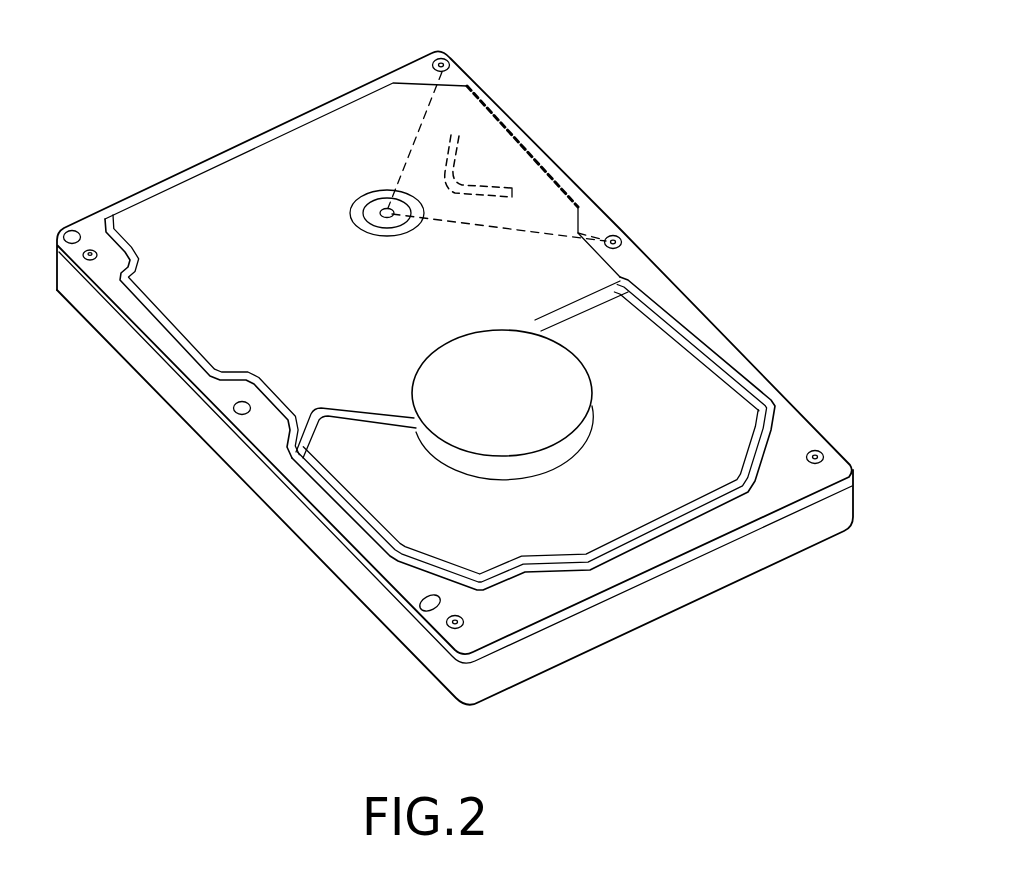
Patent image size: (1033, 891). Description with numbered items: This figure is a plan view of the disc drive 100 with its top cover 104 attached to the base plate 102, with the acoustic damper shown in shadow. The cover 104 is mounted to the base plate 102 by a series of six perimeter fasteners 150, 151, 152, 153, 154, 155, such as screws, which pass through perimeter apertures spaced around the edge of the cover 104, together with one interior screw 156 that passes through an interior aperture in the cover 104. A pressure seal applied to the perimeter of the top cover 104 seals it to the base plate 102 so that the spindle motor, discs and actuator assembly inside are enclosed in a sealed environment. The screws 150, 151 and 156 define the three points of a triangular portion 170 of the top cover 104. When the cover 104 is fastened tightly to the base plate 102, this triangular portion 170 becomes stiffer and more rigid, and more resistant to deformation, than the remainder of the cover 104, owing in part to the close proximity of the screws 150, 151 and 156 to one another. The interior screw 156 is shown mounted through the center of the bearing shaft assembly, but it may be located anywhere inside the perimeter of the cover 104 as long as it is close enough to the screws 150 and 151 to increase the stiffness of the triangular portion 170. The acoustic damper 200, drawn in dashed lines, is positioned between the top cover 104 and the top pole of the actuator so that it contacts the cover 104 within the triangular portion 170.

The disc drive 100 is at (758, 608).
The base plate 102 is at (777, 545).
The top cover 104 is at (562, 122).
The perimeter fastener 150 is at (447, 56).
The perimeter fastener 151 is at (620, 234).
The perimeter fastener 152 is at (823, 453).
The perimeter fastener 153 is at (452, 625).
The perimeter fastener 154 is at (243, 404).
The perimeter fastener 155 is at (72, 232).
The interior screw 156 is at (397, 213).
The triangular portion 170 is at (410, 153).
The acoustic damper 200 is at (478, 190).